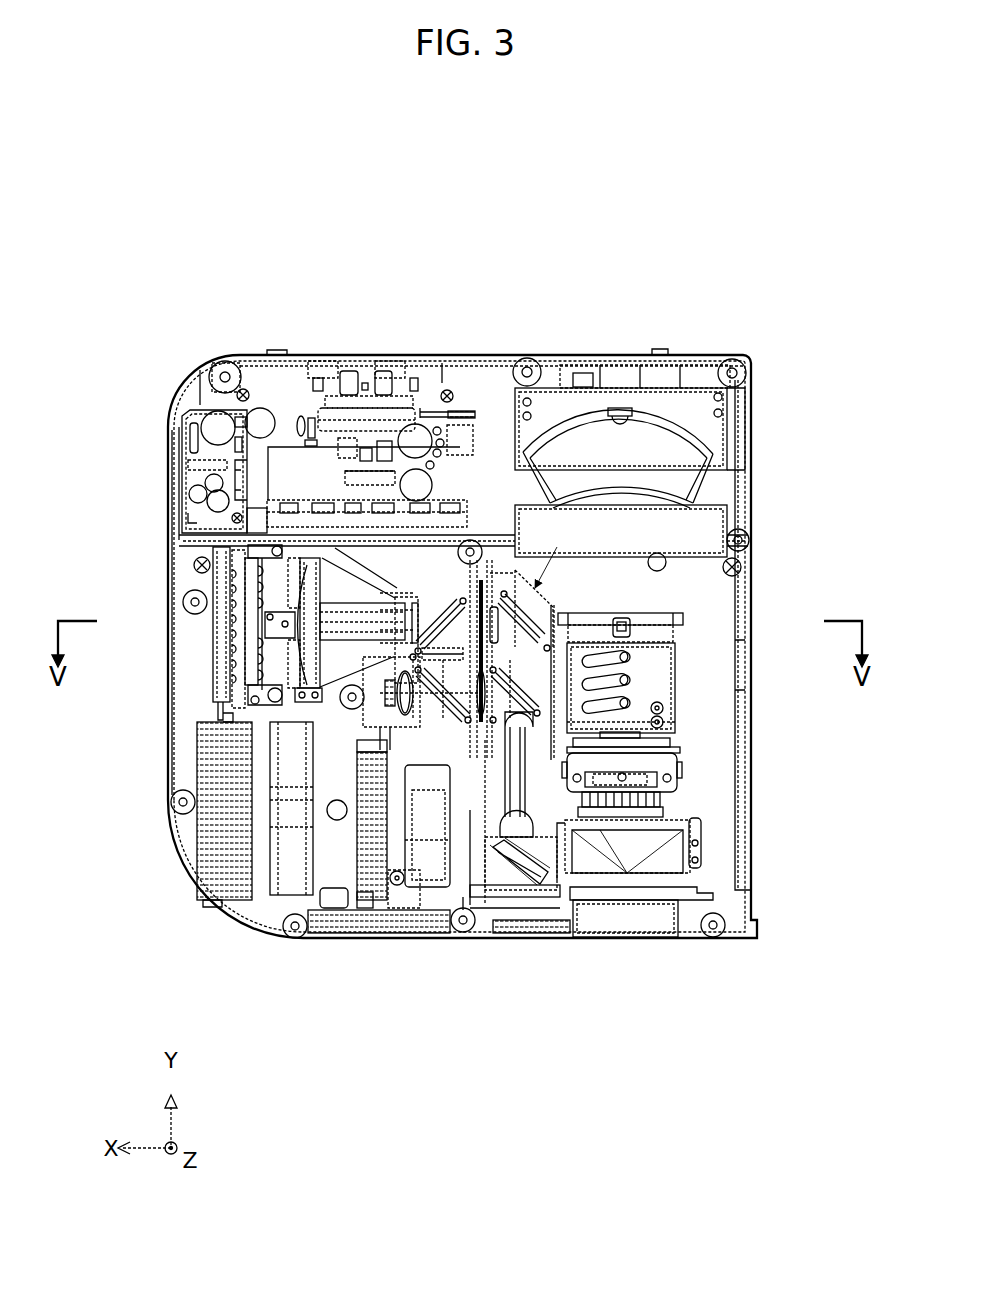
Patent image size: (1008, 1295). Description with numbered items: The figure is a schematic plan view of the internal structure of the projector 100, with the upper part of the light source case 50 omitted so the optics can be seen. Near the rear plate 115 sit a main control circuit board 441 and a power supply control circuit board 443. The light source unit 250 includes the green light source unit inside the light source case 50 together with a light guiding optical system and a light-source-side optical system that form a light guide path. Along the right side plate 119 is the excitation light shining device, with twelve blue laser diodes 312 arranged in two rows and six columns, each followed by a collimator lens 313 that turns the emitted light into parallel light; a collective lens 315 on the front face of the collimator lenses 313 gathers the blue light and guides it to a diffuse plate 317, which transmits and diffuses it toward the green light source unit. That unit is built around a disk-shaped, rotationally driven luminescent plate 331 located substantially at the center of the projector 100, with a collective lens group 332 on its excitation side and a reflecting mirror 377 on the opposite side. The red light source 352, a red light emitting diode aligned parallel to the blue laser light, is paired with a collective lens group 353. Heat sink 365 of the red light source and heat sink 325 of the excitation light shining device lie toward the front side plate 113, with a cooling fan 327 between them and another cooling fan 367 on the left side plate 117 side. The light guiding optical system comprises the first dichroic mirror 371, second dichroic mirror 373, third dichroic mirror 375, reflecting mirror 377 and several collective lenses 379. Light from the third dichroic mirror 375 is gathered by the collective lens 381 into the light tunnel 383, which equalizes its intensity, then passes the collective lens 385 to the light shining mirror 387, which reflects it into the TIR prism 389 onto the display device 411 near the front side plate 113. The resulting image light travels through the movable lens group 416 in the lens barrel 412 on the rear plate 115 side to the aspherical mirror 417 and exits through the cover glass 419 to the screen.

The projector 100 is at (702, 270).
The main control circuit board 441 is at (328, 525).
The power supply control circuit board 443 is at (287, 407).
The light source unit 250 is at (318, 430).
The diffuse plate 317 is at (388, 555).
The collective lenses 379 is at (448, 1000).
The first dichroic mirror 371 is at (445, 610).
The collective lens group 332 is at (488, 600).
The rear plate 115 is at (600, 357).
The luminescent plate 331 is at (520, 535).
The aspherical mirror 417 is at (667, 458).
The cover glass 419 is at (665, 550).
The reflecting mirror 377 is at (530, 612).
The left side plate 117 is at (752, 633).
The collective lens 315 is at (305, 600).
The right side plate 119 is at (176, 498).
The blue laser diodes 312 is at (258, 575).
The collimator lens 313 is at (258, 607).
The heat sink 325 is at (240, 760).
The cooling fan 327 is at (290, 762).
The red light source 352 is at (378, 705).
The collective lens group 353 is at (385, 718).
The heat sink 365 is at (375, 755).
The second dichroic mirror 373 is at (430, 770).
The cooling fan 367 is at (487, 830).
The light source case 50 is at (481, 745).
The light shining mirror 387 is at (520, 882).
The collective lens 385 is at (560, 900).
The front side plate 113 is at (595, 935).
The TIR prism 389 is at (640, 890).
The display device 411 is at (695, 900).
The lens barrel 412 is at (660, 667).
The movable lens group 416 is at (640, 683).
The third dichroic mirror 375 is at (665, 755).
The collective lens 381 is at (690, 835).
The light tunnel 383 is at (650, 915).